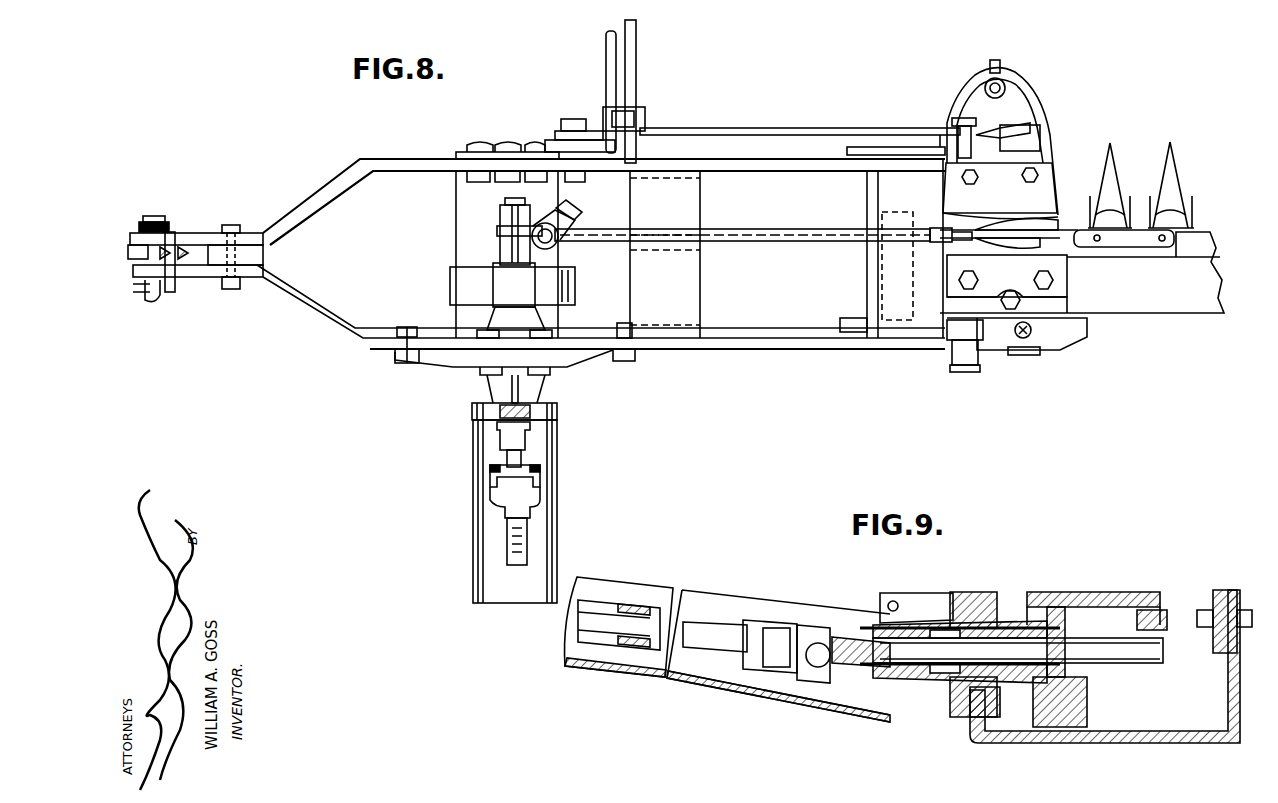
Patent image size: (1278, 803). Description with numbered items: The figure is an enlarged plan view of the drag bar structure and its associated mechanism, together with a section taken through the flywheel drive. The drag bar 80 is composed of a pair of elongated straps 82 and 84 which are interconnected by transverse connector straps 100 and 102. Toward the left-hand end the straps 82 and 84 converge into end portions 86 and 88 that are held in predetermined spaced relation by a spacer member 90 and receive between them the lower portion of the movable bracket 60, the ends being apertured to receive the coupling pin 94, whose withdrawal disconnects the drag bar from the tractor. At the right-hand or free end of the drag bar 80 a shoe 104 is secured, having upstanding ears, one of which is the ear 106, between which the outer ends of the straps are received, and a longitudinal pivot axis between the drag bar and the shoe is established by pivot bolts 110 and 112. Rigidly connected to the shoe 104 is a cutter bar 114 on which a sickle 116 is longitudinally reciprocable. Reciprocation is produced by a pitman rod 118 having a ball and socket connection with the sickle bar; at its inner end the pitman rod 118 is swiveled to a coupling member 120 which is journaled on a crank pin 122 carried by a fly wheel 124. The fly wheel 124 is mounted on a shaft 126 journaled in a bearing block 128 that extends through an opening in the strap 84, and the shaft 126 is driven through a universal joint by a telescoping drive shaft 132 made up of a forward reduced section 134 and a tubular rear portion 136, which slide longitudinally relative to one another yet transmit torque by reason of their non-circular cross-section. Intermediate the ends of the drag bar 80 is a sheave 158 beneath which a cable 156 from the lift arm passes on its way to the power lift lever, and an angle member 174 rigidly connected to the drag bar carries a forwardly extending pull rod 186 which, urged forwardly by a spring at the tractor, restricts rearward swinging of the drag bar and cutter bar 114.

In FIG. 8, the movable bracket 60 is at (182, 255).
In FIG. 8, the drag bar 80 is at (731, 358).
In FIG. 8, the elongated strap 82 is at (436, 164).
In FIG. 8, the elongated strap 84 is at (772, 333).
In FIG. 9, the elongated strap 84 is at (985, 593).
In FIG. 8, the end portion 86 is at (187, 234).
In FIG. 8, the end portion 88 is at (192, 278).
In FIG. 8, the spacer member 90 is at (262, 253).
In FIG. 8, the coupling pin 94 is at (158, 222).
In FIG. 8, the transverse connector strap 100 is at (700, 197).
In FIG. 8, the transverse connector strap 102 is at (887, 275).
In FIG. 8, the shoe 104 is at (948, 106).
In FIG. 8, the upstanding ear 106 is at (948, 344).
In FIG. 8, the pivot bolt 110 is at (970, 372).
In FIG. 8, the pivot bolt 112 is at (962, 118).
In FIG. 8, the cutter bar 114 is at (1186, 325).
In FIG. 8, the sickle 116 is at (1095, 260).
In FIG. 8, the pitman rod 118 is at (749, 233).
In FIG. 8, the coupling member 120 is at (500, 228).
In FIG. 9, the coupling member 120 is at (1105, 593).
In FIG. 9, the crank pin 122 is at (1115, 642).
In FIG. 8, the fly wheel 124 is at (452, 292).
In FIG. 9, the fly wheel 124 is at (1088, 706).
In FIG. 9, the shaft 126 is at (1003, 645).
In FIG. 9, the bearing block 128 is at (922, 690).
In FIG. 9, the telescoping drive shaft 132 is at (634, 598).
In FIG. 9, the forward reduced section 134 is at (702, 622).
In FIG. 9, the tubular rear portion 136 is at (590, 600).
In FIG. 8, the cable 156 is at (800, 123).
In FIG. 8, the sheave 158 is at (548, 148).
In FIG. 8, the angle member 174 is at (625, 100).
In FIG. 8, the pull rod 186 is at (606, 50).